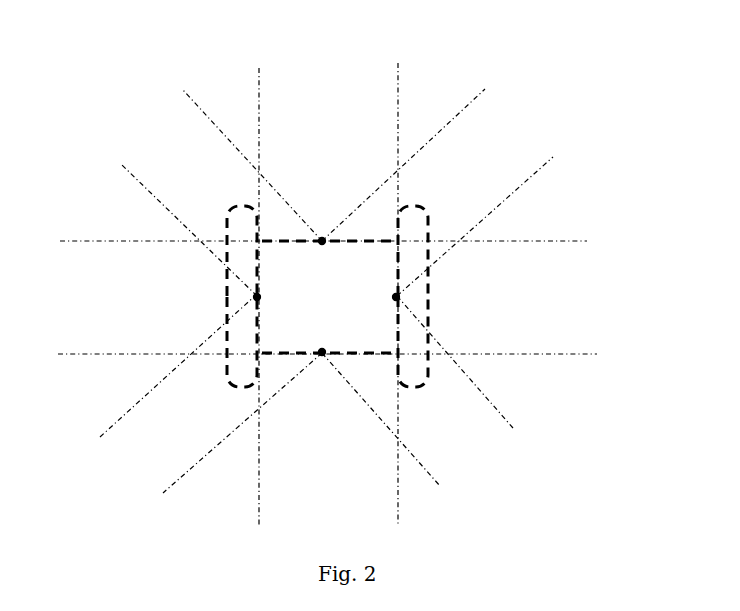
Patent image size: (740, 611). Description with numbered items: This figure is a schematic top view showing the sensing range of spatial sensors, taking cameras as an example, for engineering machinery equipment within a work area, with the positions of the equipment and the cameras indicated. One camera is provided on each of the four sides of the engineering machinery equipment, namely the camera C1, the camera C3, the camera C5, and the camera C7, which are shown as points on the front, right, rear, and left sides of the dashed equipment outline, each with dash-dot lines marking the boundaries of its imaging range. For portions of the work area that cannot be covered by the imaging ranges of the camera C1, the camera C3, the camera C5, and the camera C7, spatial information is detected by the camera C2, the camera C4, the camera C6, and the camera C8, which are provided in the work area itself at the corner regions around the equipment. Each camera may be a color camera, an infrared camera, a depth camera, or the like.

The camera C1 is at (334, 167).
The camera C2 is at (431, 239).
The camera C3 is at (473, 292).
The camera C4 is at (431, 364).
The camera C5 is at (301, 421).
The camera C6 is at (218, 364).
The camera C7 is at (180, 301).
The camera C8 is at (218, 238).